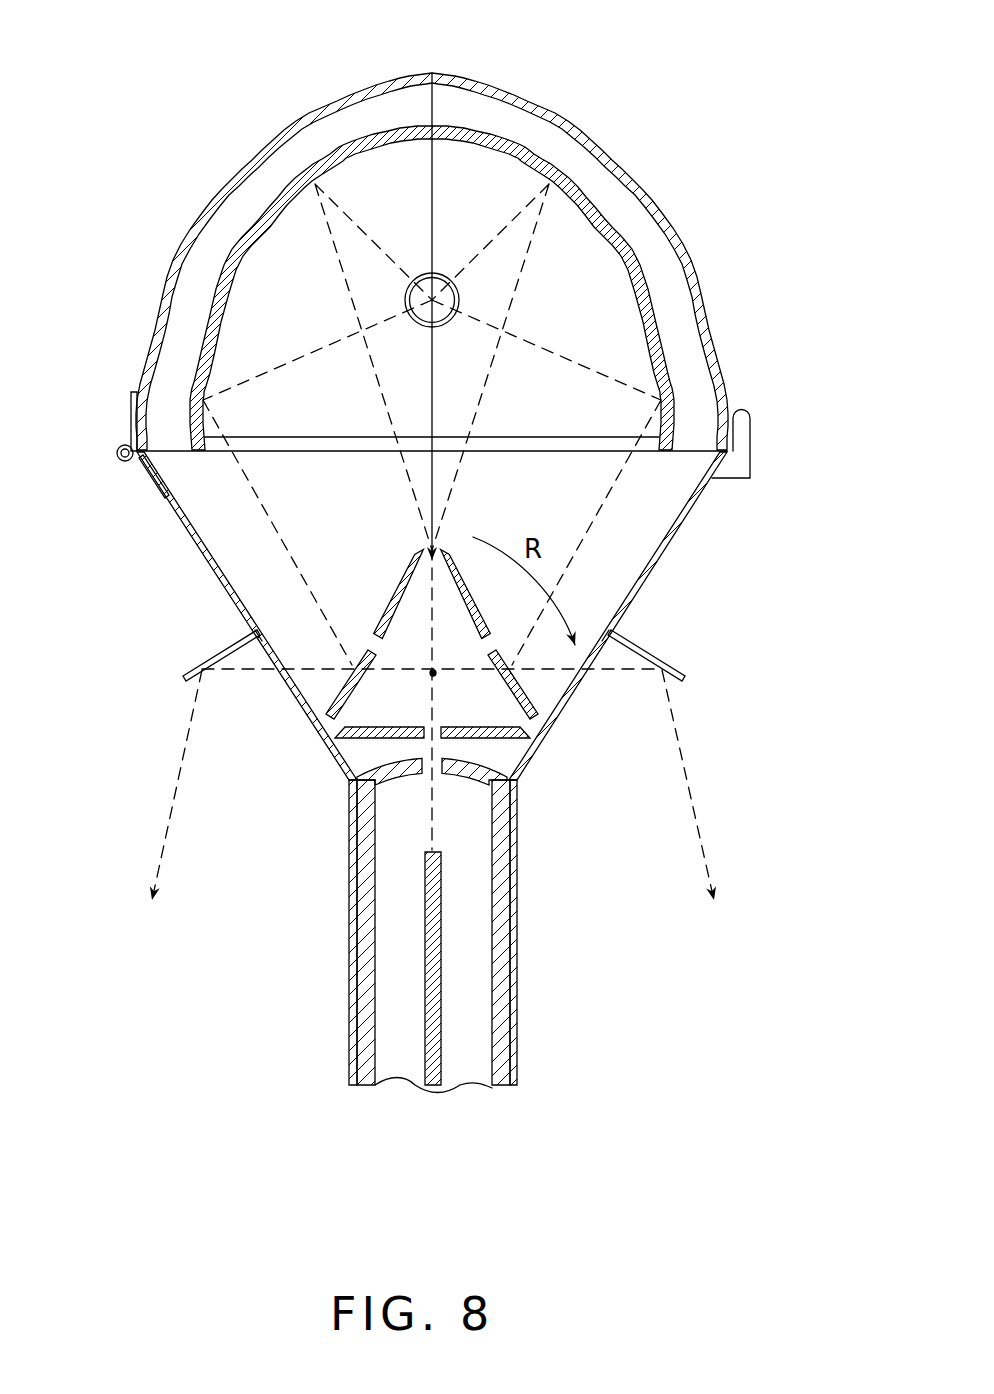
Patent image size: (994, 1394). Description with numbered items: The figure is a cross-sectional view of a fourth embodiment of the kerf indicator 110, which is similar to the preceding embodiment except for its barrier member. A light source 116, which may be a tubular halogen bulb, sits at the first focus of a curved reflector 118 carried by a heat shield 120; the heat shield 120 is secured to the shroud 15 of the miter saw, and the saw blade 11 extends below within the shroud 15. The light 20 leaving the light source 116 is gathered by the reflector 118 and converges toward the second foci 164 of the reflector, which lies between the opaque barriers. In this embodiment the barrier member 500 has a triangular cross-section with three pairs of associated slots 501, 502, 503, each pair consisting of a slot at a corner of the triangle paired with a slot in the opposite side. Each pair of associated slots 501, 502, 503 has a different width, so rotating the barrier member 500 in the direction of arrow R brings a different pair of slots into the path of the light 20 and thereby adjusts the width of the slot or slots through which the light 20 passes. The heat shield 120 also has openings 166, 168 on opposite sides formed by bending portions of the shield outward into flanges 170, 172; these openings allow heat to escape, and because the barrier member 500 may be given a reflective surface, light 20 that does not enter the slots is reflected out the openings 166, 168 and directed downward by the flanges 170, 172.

The kerf indicator 110 is at (708, 125).
The reflector 118 is at (358, 152).
The heat shield 120 is at (205, 197).
The light source 116 is at (434, 297).
The light 20 is at (463, 360).
The barrier member 500 is at (413, 553).
The associated slots 501 is at (440, 548).
The associated slots 502 is at (368, 644).
The associated slots 503 is at (496, 642).
The second foci 164 is at (438, 678).
The opening 166 is at (265, 676).
The opening 168 is at (600, 675).
The flange 170 is at (657, 648).
The flange 172 is at (205, 659).
The shroud 15 is at (498, 961).
The saw blade 11 is at (446, 1050).